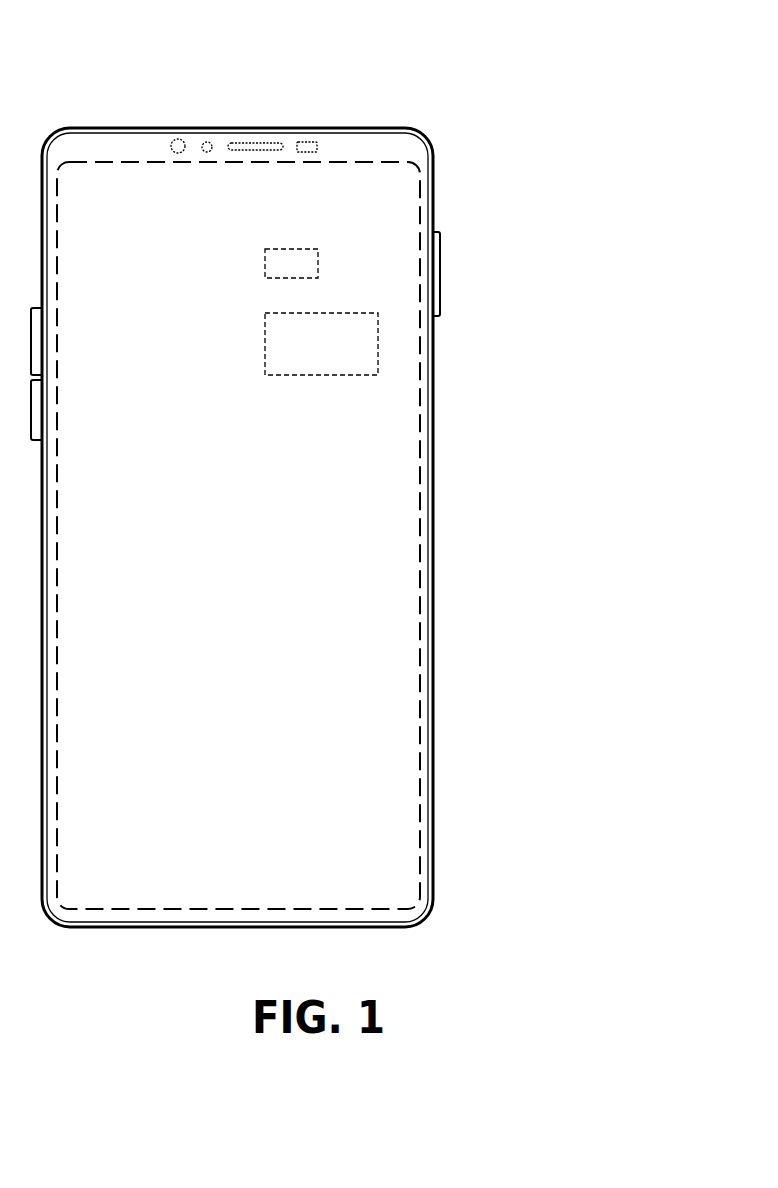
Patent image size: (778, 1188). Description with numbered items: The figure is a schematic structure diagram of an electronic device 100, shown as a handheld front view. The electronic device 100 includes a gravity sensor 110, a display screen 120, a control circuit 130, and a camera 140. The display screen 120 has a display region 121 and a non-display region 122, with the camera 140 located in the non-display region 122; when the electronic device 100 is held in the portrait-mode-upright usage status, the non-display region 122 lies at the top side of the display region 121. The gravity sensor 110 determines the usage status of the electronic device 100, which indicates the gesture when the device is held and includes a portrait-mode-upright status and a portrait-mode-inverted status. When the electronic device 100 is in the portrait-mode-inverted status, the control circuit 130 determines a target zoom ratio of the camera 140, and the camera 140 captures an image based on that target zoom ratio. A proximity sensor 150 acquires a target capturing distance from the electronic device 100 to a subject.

The electronic device 100 is at (303, 48).
The gravity sensor 110 is at (318, 262).
The display screen 120 is at (435, 518).
The display region 121 is at (333, 450).
The non-display region 122 is at (362, 148).
The control circuit 130 is at (378, 348).
The camera 140 is at (179, 139).
The proximity sensor 150 is at (209, 145).